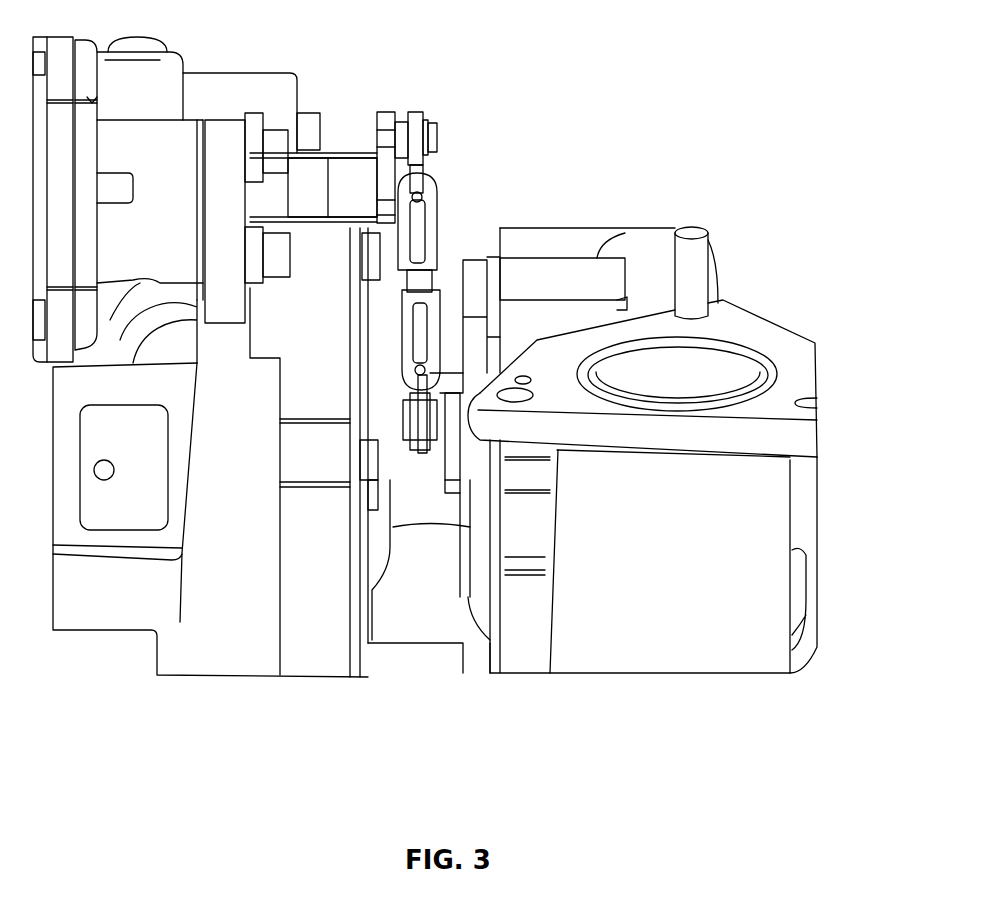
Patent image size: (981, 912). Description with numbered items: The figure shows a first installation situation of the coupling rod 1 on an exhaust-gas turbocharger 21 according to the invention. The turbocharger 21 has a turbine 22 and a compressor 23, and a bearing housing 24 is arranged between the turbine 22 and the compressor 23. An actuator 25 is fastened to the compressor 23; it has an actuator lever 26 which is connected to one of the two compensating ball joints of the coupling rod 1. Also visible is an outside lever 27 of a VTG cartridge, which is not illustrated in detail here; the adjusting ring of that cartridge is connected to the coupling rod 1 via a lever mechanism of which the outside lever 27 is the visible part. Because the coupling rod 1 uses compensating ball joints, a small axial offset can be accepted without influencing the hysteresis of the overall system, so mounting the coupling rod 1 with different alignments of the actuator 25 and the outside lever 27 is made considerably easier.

The exhaust-gas turbocharger 21 is at (561, 95).
The coupling rod 1 is at (445, 266).
The turbine 22 is at (748, 284).
The compressor 23 is at (238, 682).
The bearing housing 24 is at (428, 662).
The actuator 25 is at (248, 68).
The actuator lever 26 is at (390, 108).
The outside lever 27 is at (450, 493).